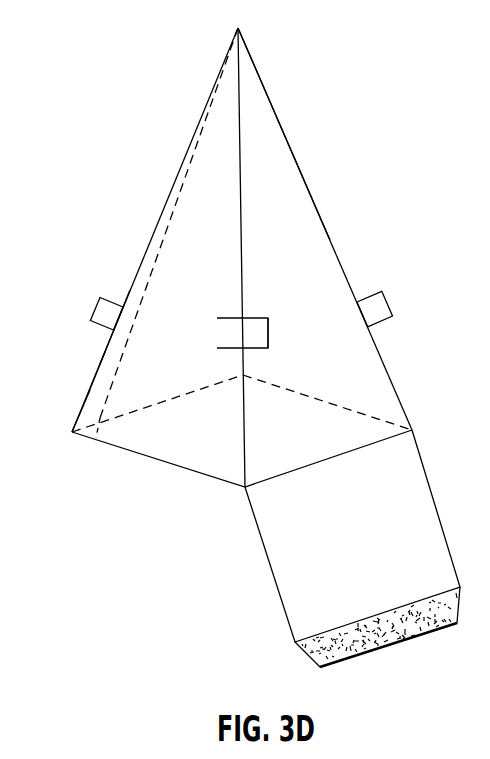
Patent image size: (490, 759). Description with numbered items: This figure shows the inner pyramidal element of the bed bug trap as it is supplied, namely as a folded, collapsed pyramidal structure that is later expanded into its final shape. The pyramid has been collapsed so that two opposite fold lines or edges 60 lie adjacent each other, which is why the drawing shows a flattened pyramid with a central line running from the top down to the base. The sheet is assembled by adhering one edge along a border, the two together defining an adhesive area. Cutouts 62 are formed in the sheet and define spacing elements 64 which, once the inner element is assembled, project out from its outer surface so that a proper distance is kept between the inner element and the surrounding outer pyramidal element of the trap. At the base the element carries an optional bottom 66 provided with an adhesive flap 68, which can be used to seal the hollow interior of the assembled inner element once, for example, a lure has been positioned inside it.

The fold lines 60 is at (243, 290).
The cutouts 62 is at (233, 318).
The spacing elements 64 is at (258, 334).
The bottom 66 is at (397, 505).
The adhesive flap 68 is at (388, 642).